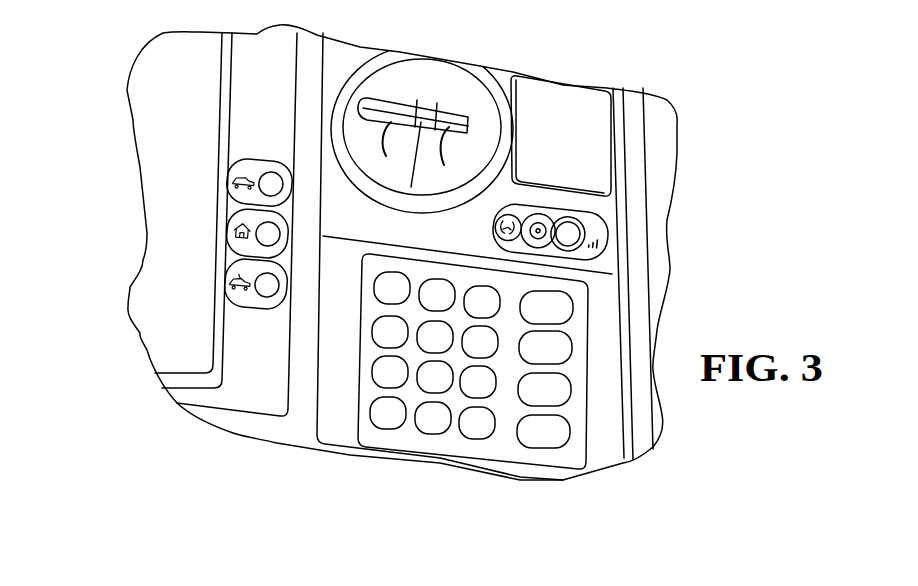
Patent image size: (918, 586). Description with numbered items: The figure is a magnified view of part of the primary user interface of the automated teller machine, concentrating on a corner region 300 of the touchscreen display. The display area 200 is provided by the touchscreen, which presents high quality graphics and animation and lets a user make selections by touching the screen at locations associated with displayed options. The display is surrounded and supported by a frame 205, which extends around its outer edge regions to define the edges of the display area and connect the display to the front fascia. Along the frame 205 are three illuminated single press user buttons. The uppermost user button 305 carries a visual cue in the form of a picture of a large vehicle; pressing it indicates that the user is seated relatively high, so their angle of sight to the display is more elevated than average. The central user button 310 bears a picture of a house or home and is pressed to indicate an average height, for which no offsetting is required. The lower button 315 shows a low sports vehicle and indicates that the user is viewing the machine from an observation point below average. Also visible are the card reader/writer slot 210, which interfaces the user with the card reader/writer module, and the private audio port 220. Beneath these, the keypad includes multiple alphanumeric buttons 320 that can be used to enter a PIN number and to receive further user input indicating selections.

The display area 200 is at (177, 245).
The frame 205 is at (200, 418).
The card reader/writer slot 210 is at (460, 116).
The private audio port 220 is at (547, 208).
The corner region of the display 300 is at (277, 443).
The uppermost user button 305 is at (263, 183).
The central user button 310 is at (260, 232).
The lower button 315 is at (260, 293).
The alphanumeric buttons 320 is at (470, 441).